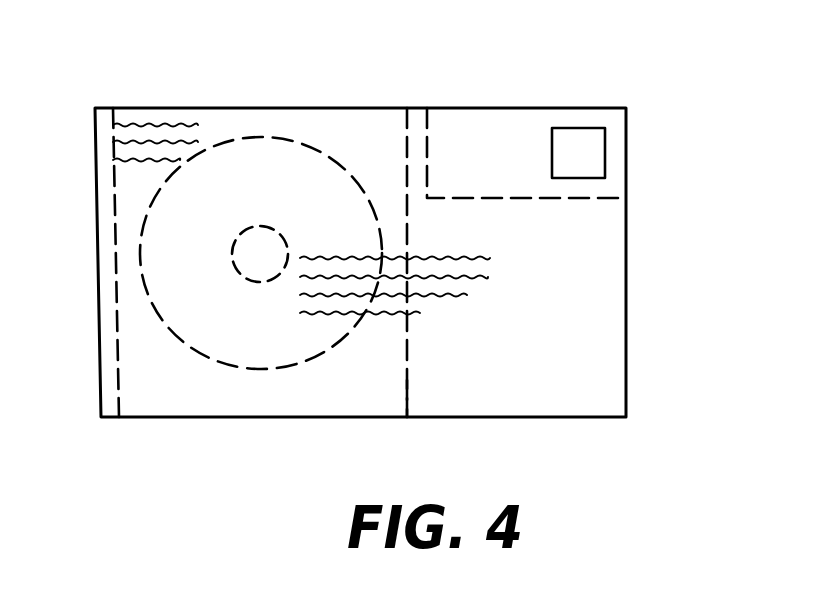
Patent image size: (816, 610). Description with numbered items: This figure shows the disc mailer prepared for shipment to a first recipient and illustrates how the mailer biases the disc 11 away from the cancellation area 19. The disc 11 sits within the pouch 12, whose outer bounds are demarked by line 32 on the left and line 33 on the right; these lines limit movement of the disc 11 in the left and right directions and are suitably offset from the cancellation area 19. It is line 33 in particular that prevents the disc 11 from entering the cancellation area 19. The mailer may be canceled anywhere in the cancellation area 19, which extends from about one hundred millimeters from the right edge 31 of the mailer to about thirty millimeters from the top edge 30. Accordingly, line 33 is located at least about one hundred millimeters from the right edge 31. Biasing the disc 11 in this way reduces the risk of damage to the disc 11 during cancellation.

The right edge 31 is at (626, 265).
The top edge 30 is at (393, 108).
The line 32 is at (120, 362).
The line 33 is at (410, 385).
The disc 11 is at (212, 360).
The pouch 12 is at (410, 358).
The cancellation area 19 is at (526, 153).